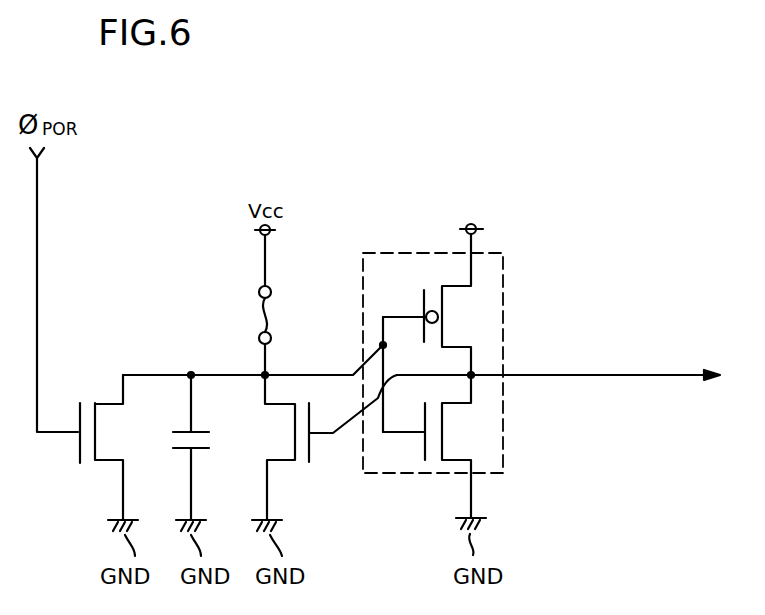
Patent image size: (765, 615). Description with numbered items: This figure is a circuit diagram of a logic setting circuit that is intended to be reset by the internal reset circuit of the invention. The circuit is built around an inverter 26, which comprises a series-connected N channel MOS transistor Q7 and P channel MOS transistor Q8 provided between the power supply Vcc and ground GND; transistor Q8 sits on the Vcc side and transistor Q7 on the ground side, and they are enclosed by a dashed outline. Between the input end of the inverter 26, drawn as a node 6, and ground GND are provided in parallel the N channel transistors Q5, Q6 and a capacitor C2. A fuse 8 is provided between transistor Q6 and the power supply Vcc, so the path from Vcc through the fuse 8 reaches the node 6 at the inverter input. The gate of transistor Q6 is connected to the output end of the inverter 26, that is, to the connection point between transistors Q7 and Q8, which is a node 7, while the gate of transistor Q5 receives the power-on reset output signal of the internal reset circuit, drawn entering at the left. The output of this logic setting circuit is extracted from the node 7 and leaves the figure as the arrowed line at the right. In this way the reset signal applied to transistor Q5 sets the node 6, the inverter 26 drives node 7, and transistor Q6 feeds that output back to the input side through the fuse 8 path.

The node 6 is at (191, 371).
The node 7 is at (474, 373).
The fuse 8 is at (273, 297).
The inverter 26 is at (468, 364).
The N channel transistor Q5 is at (85, 466).
The N channel transistor Q6 is at (296, 468).
The N channel MOS transistor Q7 is at (447, 436).
The P channel MOS transistor Q8 is at (447, 318).
The capacitor C2 is at (210, 433).